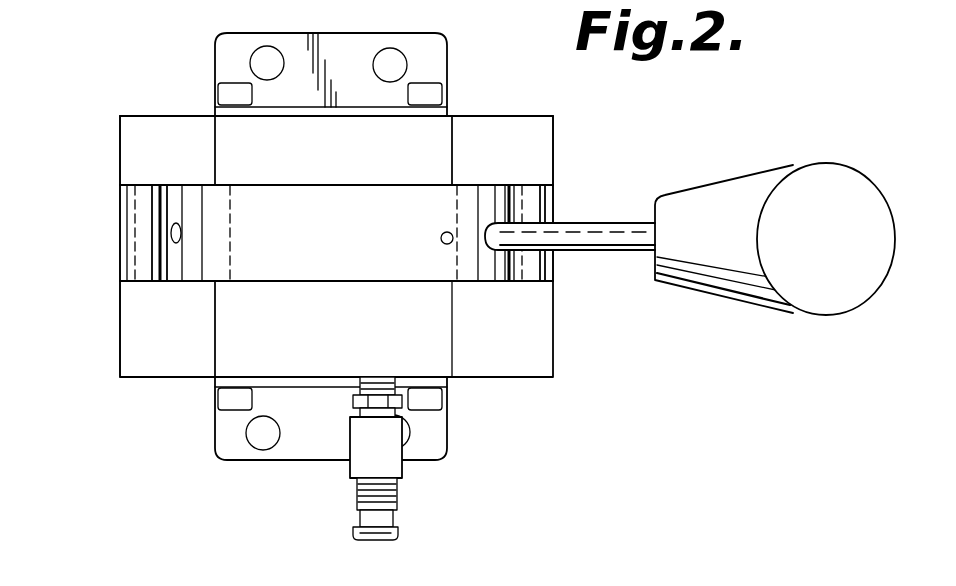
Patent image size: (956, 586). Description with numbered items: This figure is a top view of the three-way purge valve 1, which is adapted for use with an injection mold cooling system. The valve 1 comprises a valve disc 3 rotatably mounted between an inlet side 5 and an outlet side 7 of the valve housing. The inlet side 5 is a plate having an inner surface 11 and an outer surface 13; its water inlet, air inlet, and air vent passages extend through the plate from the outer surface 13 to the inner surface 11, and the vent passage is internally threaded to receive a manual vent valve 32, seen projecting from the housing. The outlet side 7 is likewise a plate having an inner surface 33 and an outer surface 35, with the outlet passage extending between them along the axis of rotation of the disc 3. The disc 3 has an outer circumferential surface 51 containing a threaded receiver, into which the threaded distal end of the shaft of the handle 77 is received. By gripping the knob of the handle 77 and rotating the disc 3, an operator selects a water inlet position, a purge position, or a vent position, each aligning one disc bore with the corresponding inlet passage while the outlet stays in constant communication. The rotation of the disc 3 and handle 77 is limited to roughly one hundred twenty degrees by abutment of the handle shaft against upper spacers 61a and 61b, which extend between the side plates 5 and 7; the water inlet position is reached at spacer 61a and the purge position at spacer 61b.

The three-way purge valve 1 is at (588, 389).
The valve disc 3 is at (511, 192).
The inlet side 5 is at (120, 322).
The outlet side 7 is at (120, 150).
The inner surface 11 is at (260, 282).
The outer surface 13 is at (185, 380).
The manual vent valve 32 is at (398, 488).
The inner surface 33 is at (256, 190).
The outer surface 35 is at (166, 112).
The outer circumferential surface 51 is at (365, 245).
The upper spacer 61a is at (120, 230).
The upper spacer 61b is at (553, 204).
The handle 77 is at (716, 183).